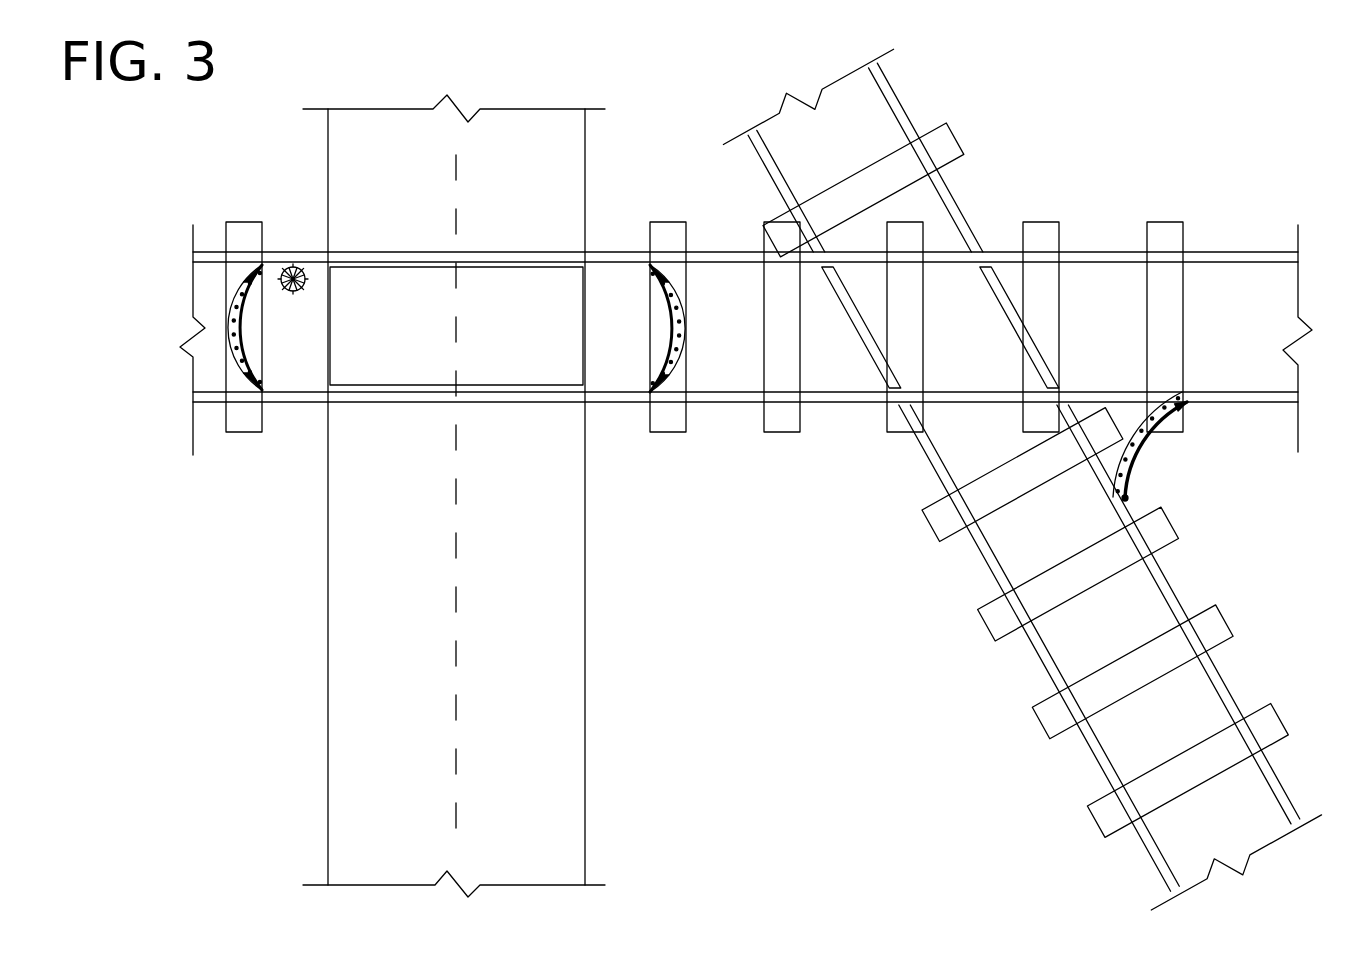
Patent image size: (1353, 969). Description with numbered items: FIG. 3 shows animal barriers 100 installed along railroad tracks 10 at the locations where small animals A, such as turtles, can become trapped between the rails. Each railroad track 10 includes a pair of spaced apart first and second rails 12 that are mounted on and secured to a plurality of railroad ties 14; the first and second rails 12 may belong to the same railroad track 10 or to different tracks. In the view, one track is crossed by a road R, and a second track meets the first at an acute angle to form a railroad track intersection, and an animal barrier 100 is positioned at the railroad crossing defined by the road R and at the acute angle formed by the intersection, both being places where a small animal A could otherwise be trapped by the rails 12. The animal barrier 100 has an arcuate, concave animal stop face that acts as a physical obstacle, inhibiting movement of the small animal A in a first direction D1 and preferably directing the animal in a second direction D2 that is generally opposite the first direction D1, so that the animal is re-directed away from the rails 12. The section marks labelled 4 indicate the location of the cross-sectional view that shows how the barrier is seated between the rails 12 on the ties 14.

The railroad track 10 is at (1256, 218).
The first and second rails 12 is at (720, 252).
The railroad ties 14 is at (232, 418).
The animal barrier 100 is at (226, 286).
The road R is at (597, 683).
The small animal A is at (306, 296).
The first direction D1 is at (329, 283).
The second direction D2 is at (368, 370).
The section line 4- 4 is at (225, 160).